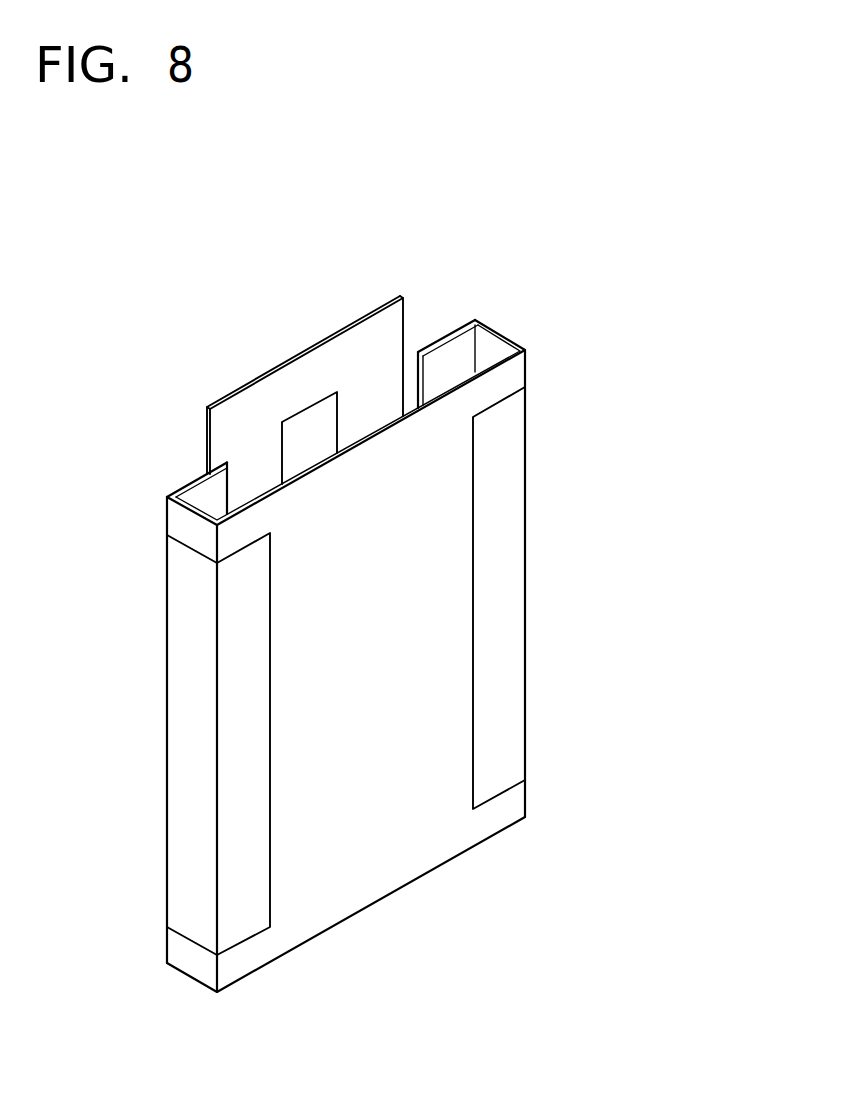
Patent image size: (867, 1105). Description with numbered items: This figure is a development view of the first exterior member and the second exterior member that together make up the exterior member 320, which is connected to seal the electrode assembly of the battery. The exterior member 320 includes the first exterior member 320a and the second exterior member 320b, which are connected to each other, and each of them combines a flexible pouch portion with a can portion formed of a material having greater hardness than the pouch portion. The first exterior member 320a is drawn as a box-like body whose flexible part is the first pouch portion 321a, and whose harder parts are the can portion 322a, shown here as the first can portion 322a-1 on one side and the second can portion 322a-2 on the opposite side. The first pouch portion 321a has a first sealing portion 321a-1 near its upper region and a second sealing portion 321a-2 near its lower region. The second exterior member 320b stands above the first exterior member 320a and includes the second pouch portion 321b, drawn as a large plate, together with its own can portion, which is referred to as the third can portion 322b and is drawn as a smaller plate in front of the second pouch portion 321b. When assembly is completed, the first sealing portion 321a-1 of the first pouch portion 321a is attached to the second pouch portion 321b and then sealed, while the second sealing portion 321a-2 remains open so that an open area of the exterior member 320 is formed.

The exterior member 320 is at (92, 370).
The first exterior member 320a is at (732, 578).
The first pouch portion 321a is at (410, 690).
The first sealing portion 321a-1 is at (513, 377).
The second sealing portion 321a-2 is at (397, 877).
The can portion 322a is at (661, 549).
The first can portion 322a-1 is at (245, 655).
The second can portion 322a-2 is at (502, 607).
The second exterior member 320b is at (323, 274).
The second pouch portion 321b is at (365, 393).
The third can portion 322b is at (308, 422).